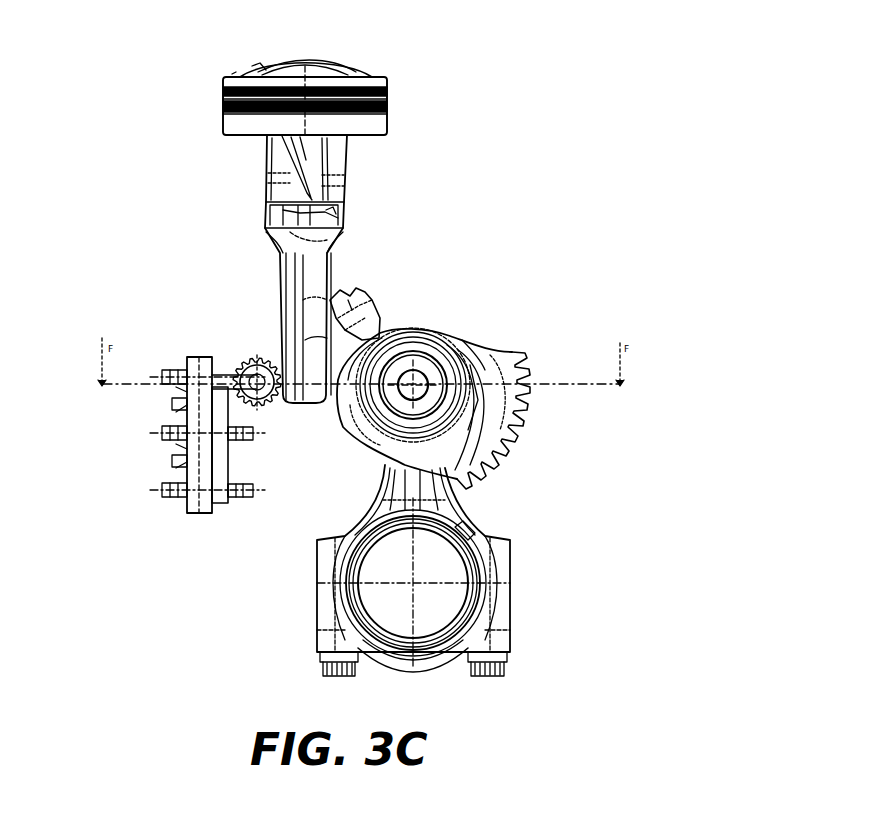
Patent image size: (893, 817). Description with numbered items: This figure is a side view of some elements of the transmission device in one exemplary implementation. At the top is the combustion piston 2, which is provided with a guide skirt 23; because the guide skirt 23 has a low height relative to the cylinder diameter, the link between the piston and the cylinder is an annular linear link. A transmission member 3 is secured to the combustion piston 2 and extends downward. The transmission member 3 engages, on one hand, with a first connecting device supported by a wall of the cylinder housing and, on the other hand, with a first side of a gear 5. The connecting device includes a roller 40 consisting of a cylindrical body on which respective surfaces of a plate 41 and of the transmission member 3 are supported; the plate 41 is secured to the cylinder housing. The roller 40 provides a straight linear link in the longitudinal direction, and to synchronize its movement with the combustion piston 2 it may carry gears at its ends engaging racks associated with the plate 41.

The combustion piston 2 is at (378, 86).
The guide skirt 23 is at (223, 115).
The transmission member 3 is at (330, 262).
The gear 5 is at (483, 358).
The roller 40 is at (213, 429).
The plate 41 is at (192, 512).